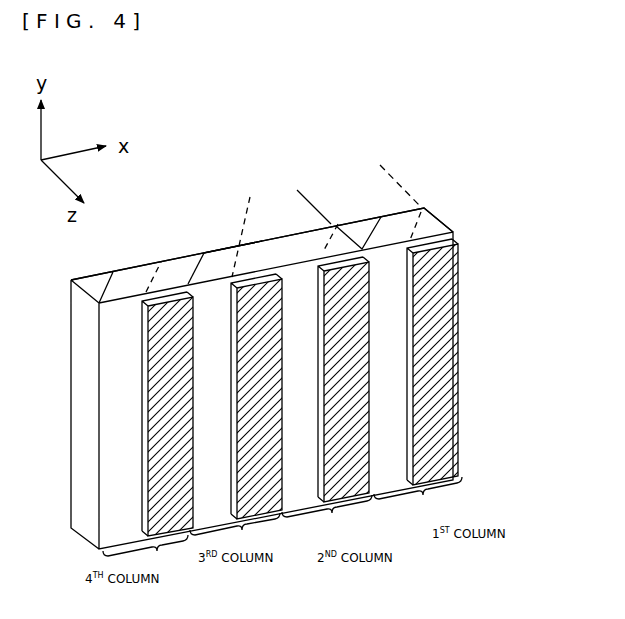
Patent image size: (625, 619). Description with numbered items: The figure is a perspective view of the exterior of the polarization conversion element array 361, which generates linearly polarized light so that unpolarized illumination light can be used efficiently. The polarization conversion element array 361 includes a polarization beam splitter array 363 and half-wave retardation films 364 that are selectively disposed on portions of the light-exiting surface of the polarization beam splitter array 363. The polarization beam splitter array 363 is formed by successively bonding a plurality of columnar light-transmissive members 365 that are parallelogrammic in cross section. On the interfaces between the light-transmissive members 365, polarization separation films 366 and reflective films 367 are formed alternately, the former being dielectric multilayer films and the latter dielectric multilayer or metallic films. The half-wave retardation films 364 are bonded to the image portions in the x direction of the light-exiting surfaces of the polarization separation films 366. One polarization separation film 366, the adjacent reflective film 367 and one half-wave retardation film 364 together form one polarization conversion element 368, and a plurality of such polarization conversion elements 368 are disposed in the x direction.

The polarization conversion element array 361 is at (493, 175).
The polarization beam splitter array 363 is at (452, 217).
The λ/2 retardation film 364 is at (458, 447).
The light-transmissive member 365 is at (223, 256).
The polarization separation film 366 is at (248, 216).
The reflective film 367 is at (191, 283).
The polarization conversion element 368 is at (380, 166).